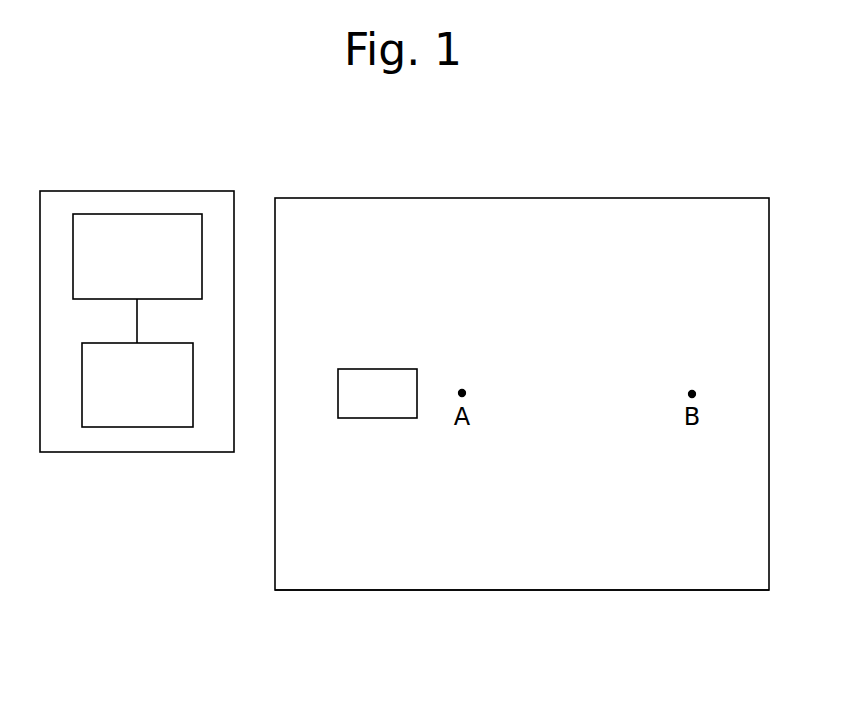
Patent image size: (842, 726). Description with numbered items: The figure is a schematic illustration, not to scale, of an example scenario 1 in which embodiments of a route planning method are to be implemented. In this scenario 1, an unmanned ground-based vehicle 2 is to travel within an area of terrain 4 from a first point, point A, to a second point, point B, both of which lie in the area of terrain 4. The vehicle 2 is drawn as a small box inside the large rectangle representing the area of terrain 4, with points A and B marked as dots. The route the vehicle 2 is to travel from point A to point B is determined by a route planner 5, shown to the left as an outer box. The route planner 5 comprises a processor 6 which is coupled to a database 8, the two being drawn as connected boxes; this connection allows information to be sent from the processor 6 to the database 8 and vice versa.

The scenario 1 is at (617, 153).
The unmanned ground-based vehicle 2 is at (380, 392).
The area of terrain 4 is at (538, 575).
The route planner 5 is at (210, 196).
The processor 6 is at (148, 413).
The database 8 is at (105, 232).